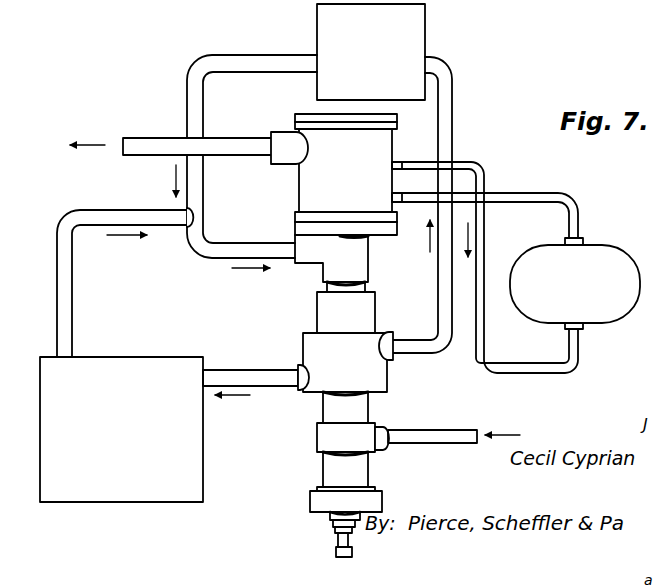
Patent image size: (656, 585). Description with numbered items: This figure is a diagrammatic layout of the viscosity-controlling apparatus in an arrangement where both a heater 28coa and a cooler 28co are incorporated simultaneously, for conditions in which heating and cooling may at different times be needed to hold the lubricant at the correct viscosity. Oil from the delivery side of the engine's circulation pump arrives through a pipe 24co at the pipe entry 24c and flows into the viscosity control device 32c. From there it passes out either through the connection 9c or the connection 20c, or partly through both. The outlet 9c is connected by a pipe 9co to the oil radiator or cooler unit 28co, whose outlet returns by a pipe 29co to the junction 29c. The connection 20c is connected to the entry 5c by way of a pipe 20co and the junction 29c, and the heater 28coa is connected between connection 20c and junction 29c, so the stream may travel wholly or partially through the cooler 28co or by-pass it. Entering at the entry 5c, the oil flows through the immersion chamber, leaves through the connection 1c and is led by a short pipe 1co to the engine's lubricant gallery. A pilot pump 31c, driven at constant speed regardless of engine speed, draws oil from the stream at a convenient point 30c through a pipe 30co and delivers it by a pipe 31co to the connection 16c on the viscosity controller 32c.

The heater 28coa is at (418, 22).
The pipe 20co is at (449, 78).
The short pipe 1co is at (237, 142).
The connection 1c is at (286, 136).
The pipe 29co is at (137, 217).
The junction 29c is at (192, 217).
The entry 5c is at (300, 245).
The connection point 30c is at (392, 165).
The pipe 30co is at (545, 373).
The connection 16c is at (392, 197).
The pipe 31co is at (558, 191).
The pilot pump 31c is at (598, 246).
The viscosity control device 32c is at (322, 318).
The connection 20c is at (395, 341).
The oil radiator or cooler unit 28co is at (145, 357).
The pipe 9co is at (255, 372).
The connection 9c is at (298, 391).
The pipe entry 24c is at (392, 428).
The pipe 24co is at (448, 443).